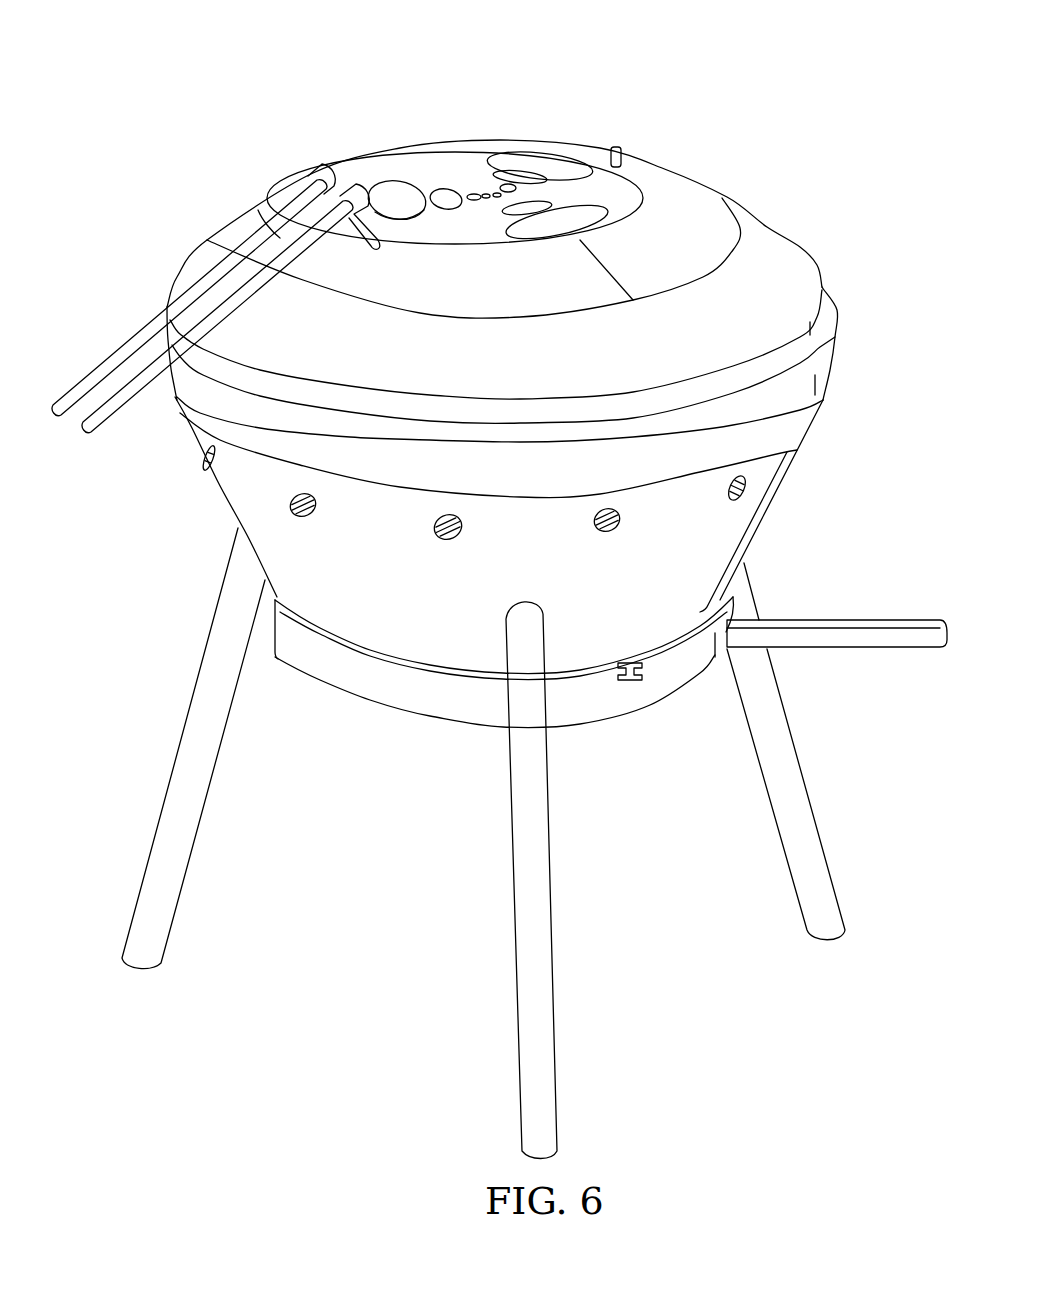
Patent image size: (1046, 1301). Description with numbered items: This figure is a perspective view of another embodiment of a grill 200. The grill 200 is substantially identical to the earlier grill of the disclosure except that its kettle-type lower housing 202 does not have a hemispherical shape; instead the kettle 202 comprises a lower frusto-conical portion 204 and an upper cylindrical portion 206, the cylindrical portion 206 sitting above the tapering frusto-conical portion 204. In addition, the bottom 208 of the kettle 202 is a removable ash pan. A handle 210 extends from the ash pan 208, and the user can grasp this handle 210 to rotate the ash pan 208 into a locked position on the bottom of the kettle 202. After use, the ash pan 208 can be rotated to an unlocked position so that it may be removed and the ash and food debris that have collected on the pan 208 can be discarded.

The grill 200 is at (760, 70).
The kettle-type lower housing 202 is at (240, 508).
The lower frusto-conical portion 204 is at (770, 505).
The upper cylindrical portion 206 is at (828, 383).
The bottom (removable ash pan) 208 is at (368, 700).
The handle 210 is at (836, 648).